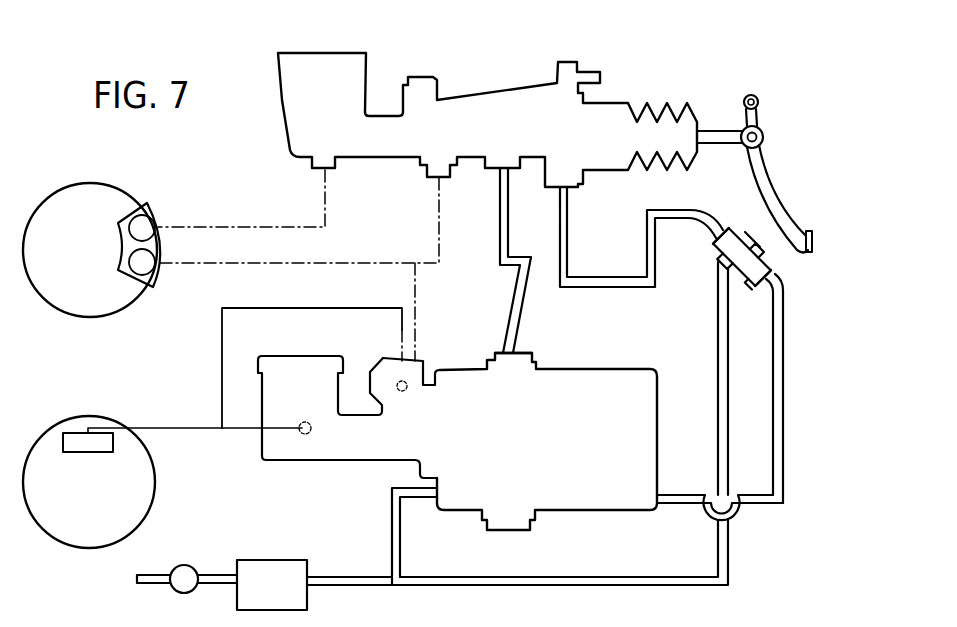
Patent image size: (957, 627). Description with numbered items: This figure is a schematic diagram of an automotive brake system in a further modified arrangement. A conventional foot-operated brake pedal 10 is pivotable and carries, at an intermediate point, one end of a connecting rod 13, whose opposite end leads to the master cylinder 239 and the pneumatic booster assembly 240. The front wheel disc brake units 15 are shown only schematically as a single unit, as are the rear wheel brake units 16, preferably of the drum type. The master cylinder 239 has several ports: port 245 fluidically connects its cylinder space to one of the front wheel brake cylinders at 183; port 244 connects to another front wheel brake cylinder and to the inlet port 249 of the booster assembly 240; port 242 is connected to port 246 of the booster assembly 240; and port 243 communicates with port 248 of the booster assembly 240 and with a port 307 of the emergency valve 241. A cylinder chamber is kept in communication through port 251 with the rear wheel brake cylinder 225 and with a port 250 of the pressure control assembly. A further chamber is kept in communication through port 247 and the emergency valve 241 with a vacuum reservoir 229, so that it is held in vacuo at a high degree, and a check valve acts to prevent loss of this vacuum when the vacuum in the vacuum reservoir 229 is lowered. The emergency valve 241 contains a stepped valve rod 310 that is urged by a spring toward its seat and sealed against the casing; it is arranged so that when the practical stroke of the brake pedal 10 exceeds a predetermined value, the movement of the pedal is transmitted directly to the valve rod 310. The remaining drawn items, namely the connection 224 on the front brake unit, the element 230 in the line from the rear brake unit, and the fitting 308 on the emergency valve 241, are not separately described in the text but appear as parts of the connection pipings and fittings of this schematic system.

The master cylinder 239 is at (508, 67).
The connecting rod 13 is at (717, 131).
The brake pedal 10 is at (812, 241).
The valve rod 310 is at (763, 240).
The port of emergency valve assembly 307 is at (721, 236).
The valve outlet port 308 is at (774, 266).
The emergency valve 241 is at (748, 291).
The booster assembly 240 is at (652, 345).
The port of booster assembly 246 is at (517, 341).
The inlet port 249 is at (416, 360).
The port of pressure control assembly 250 is at (401, 391).
The port 251 is at (305, 434).
The rear wheel brake cylinder 225 is at (86, 452).
The front wheel disc brake units 15 is at (88, 306).
The rear wheel brake units 16 is at (91, 541).
The front wheel brake cylinder 183 is at (147, 224).
The wheel cylinder port 224 is at (147, 268).
The check valve 230 is at (185, 570).
The vacuum reservoir 229 is at (271, 575).
The port of booster assembly 248 is at (437, 502).
The port 247 is at (659, 510).
The port 245 is at (323, 170).
The port 244 is at (440, 178).
The port 242 is at (501, 172).
The port 243 is at (569, 192).